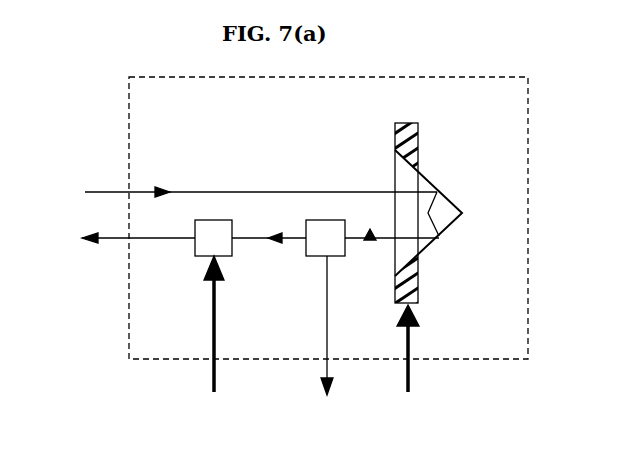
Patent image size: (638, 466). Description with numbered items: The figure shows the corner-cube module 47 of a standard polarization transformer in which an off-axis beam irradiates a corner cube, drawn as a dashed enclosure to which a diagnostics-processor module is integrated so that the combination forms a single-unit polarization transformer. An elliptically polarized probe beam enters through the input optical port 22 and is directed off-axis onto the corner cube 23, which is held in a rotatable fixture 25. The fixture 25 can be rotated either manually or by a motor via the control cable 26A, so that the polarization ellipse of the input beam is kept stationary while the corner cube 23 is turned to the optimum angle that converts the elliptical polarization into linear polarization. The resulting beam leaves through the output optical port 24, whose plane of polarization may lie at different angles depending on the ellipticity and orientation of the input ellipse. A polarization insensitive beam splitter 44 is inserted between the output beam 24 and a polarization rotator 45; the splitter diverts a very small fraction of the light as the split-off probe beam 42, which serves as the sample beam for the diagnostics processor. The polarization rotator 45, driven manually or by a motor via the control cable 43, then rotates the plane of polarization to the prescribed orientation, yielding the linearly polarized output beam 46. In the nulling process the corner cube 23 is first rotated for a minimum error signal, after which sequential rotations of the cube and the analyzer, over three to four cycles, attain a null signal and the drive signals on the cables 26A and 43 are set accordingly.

The input optical port 22 is at (235, 193).
The corner cube 23 is at (437, 240).
The output optical port 24 is at (371, 241).
The rotatable fixture 25 is at (418, 143).
The control cable 26A is at (415, 370).
The split-off probe beam 42 is at (328, 346).
The control cable 43 is at (214, 346).
The polarization insensitive beam splitter 44 is at (306, 245).
The polarization rotator 45 is at (195, 245).
The linearly polarized output beam 46 is at (114, 240).
The corner-cube module 47 is at (528, 286).